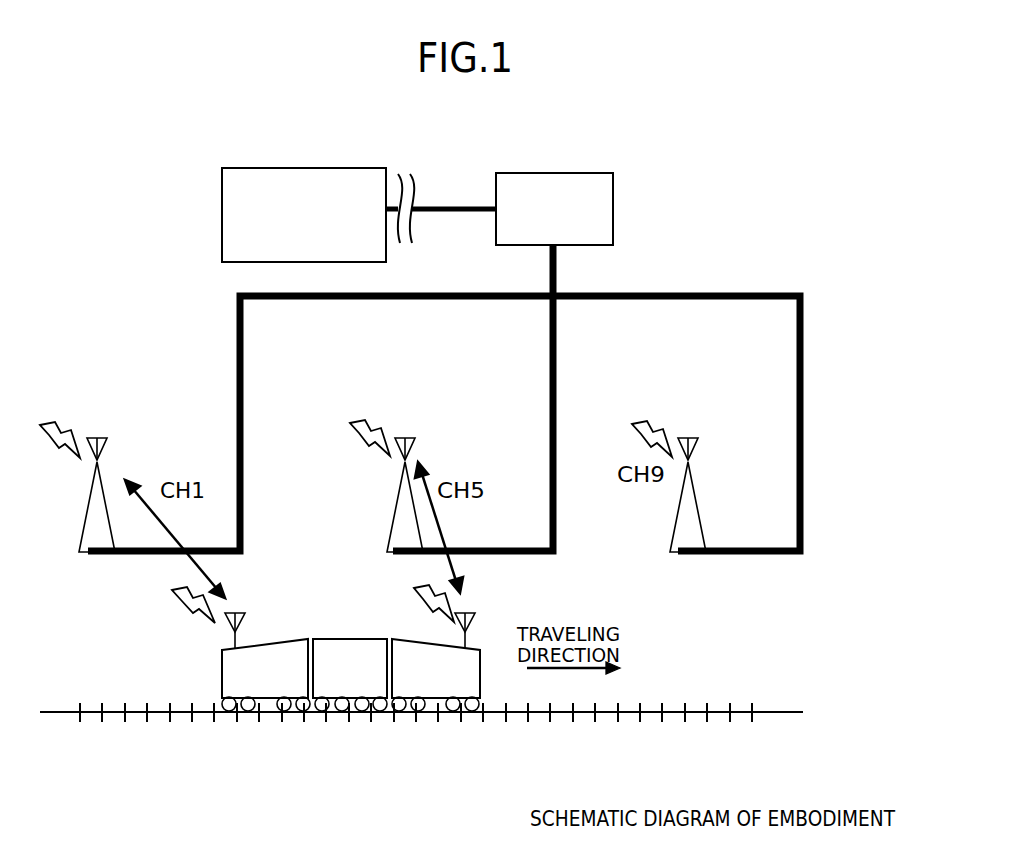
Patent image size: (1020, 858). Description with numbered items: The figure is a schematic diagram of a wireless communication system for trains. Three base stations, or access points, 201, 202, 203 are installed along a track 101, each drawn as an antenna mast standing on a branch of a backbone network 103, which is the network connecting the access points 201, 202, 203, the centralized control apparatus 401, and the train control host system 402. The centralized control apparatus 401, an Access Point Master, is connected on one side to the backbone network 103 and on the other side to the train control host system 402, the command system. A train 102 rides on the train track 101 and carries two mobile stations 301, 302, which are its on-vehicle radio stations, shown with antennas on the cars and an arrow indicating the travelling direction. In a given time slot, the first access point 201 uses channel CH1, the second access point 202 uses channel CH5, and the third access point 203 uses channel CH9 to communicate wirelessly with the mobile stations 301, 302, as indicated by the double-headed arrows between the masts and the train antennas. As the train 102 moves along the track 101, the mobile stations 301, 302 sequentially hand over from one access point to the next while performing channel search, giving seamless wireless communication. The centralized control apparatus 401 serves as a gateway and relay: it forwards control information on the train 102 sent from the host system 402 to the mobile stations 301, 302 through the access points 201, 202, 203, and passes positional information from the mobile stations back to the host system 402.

The track 101 is at (707, 710).
The train 102 is at (222, 672).
The backbone network 103 is at (638, 293).
The base station 201 is at (106, 438).
The base station 202 is at (413, 438).
The base station 203 is at (697, 438).
The mobile station 301 is at (225, 625).
The mobile station 302 is at (473, 613).
The centralized control apparatus 401 is at (553, 173).
The train control host system 402 is at (298, 168).